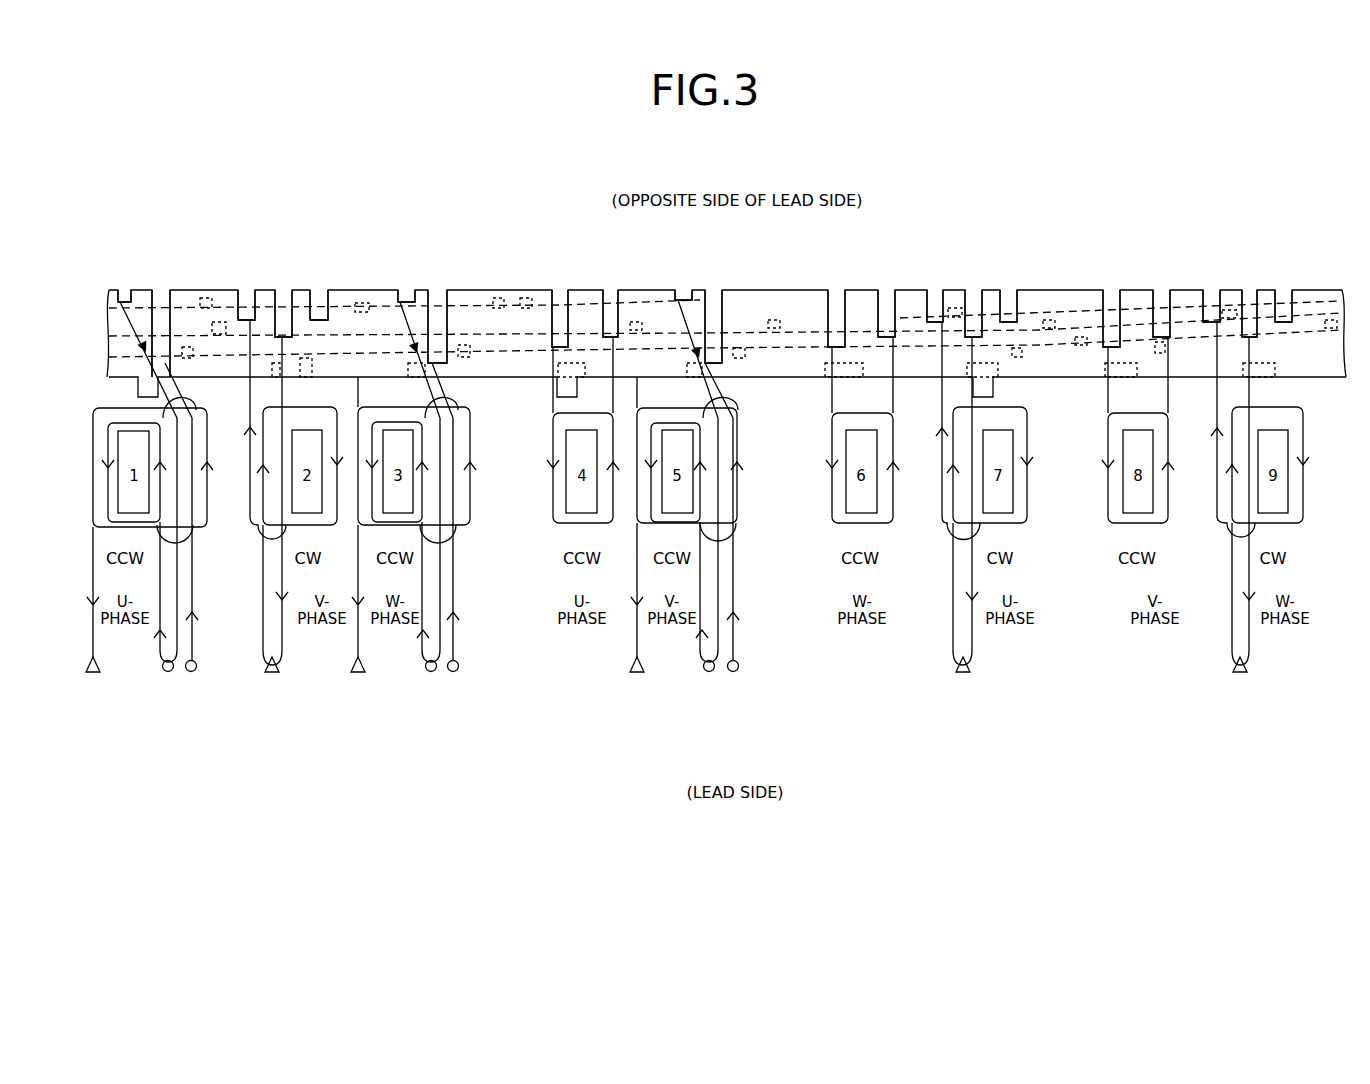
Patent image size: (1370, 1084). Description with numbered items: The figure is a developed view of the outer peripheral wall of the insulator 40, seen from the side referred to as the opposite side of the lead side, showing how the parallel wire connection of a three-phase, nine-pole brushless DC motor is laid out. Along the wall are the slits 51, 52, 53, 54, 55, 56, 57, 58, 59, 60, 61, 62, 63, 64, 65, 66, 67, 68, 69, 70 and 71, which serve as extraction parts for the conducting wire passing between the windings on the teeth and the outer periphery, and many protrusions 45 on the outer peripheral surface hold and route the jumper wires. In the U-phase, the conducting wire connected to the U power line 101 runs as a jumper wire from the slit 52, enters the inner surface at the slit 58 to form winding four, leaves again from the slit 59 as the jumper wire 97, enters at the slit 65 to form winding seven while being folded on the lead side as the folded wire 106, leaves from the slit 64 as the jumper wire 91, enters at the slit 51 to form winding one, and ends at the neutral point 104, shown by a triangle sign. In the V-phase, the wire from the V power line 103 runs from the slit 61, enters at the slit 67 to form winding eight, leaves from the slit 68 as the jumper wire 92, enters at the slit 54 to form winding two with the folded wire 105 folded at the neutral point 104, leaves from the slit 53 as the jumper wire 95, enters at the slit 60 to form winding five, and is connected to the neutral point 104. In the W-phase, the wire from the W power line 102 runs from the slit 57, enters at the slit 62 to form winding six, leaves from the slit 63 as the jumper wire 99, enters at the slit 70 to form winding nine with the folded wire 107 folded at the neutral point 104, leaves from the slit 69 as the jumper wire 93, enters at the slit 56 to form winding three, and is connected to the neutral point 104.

The insulator 40 is at (769, 288).
The protrusions 45 is at (497, 298).
The slit 51 is at (130, 288).
The slit 52 is at (161, 288).
The slit 53 is at (251, 288).
The slit 54 is at (284, 288).
The slit 55 is at (318, 288).
The slit 56 is at (404, 288).
The slit 57 is at (434, 288).
The slit 58 is at (559, 288).
The slit 59 is at (610, 288).
The slit 60 is at (683, 288).
The slit 61 is at (713, 288).
The slit 62 is at (832, 288).
The slit 63 is at (882, 288).
The slit 64 is at (937, 288).
The slit 65 is at (974, 288).
The slit 66 is at (1008, 288).
The slit 67 is at (1111, 288).
The slit 68 is at (1159, 288).
The slit 69 is at (1216, 288).
The slit 70 is at (1249, 288).
The slit 71 is at (1280, 288).
The jumper wire 91 is at (1310, 297).
The jumper wire 92 is at (214, 322).
The jumper wire 93 is at (346, 300).
The jumper wire 95 is at (525, 298).
The jumper wire 97 is at (915, 330).
The jumper wire 99 is at (1187, 330).
The U power line 101 is at (170, 672).
The W power line 102 is at (432, 672).
The V power line 103 is at (710, 672).
The neutral point 104 is at (93, 676).
The folded wire 105 is at (283, 635).
The folded wire 106 is at (973, 635).
The folded wire 107 is at (1250, 635).